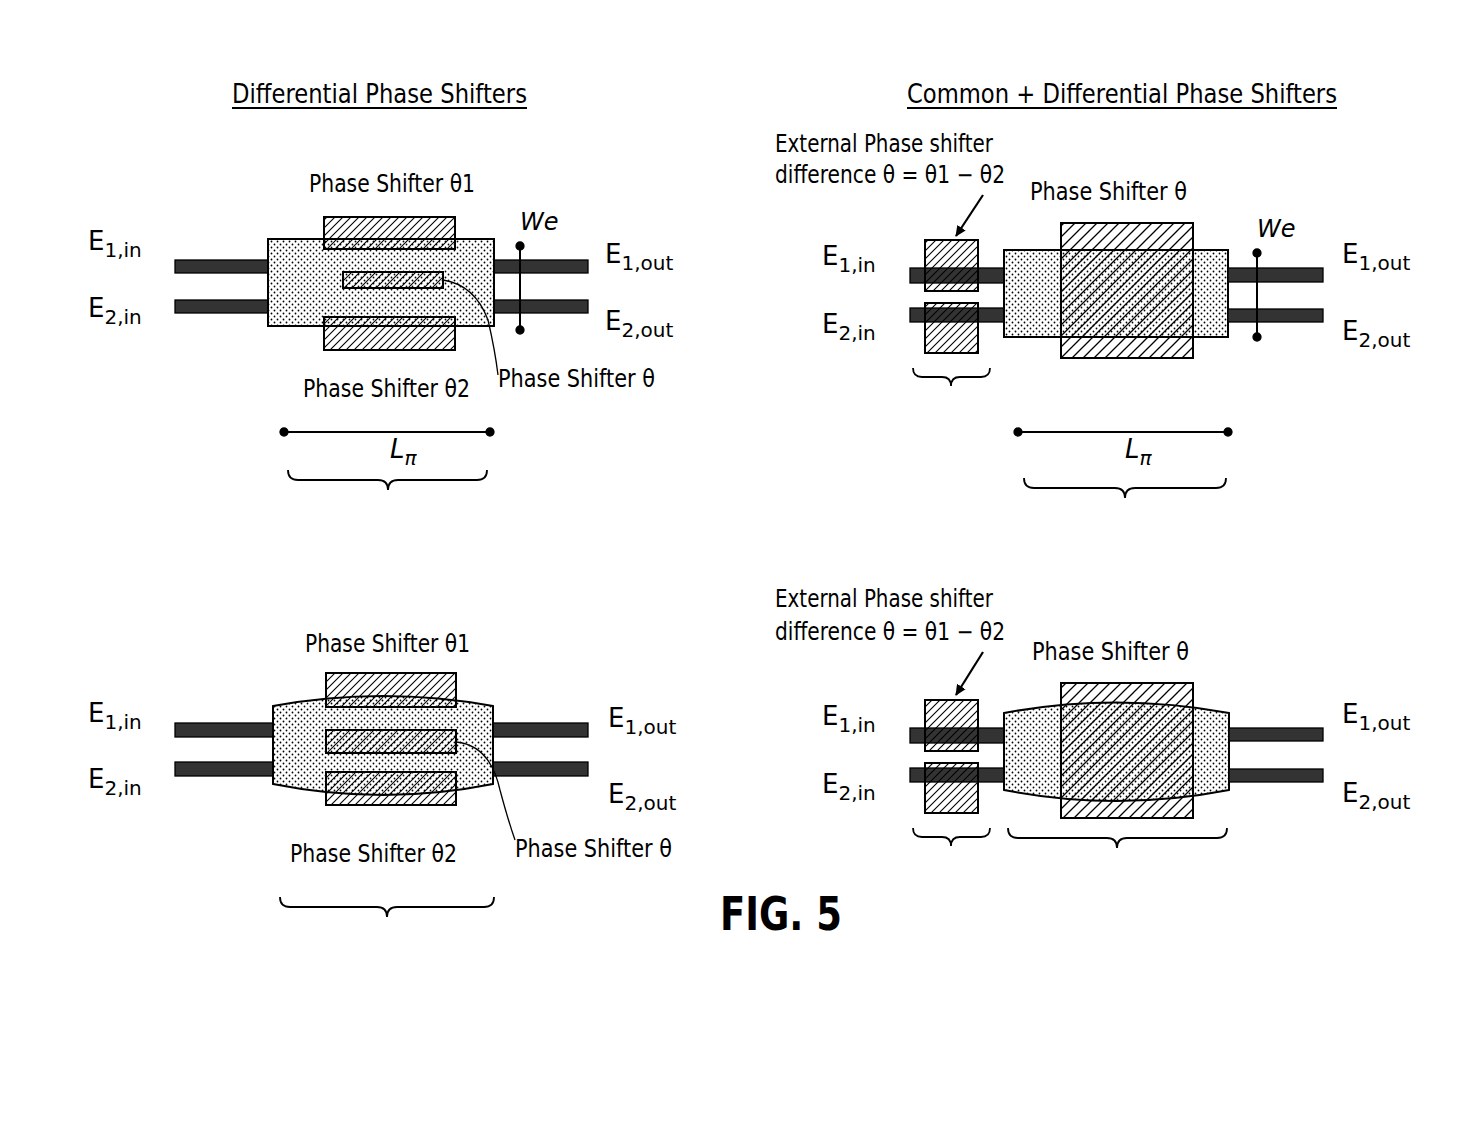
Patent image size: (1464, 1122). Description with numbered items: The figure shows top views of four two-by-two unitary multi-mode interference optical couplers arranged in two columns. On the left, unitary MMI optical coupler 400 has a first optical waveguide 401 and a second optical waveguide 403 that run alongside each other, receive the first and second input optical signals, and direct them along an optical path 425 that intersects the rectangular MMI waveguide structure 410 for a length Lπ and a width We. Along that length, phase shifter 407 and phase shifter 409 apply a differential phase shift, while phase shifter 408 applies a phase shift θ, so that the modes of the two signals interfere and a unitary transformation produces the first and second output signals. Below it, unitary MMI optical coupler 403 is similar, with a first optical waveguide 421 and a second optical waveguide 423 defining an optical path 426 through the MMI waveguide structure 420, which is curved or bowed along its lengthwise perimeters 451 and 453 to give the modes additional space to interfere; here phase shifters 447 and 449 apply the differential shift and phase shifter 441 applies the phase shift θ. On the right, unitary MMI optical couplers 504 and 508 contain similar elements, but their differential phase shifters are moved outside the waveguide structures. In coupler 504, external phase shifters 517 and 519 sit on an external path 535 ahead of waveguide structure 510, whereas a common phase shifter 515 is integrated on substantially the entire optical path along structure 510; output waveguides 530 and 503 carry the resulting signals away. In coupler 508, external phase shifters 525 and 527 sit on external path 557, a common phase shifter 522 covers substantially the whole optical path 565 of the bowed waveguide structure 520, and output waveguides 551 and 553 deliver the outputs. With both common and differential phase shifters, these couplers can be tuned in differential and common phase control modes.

The unitary MMI optical coupler 400 is at (628, 117).
The first optical waveguide 401 is at (200, 259).
The second optical waveguide 403 is at (208, 314).
The phase shifter 407 is at (328, 217).
The phase shifter 408 is at (343, 282).
The phase shifter 409 is at (337, 350).
The MMI waveguide structure 410 is at (481, 240).
The optical path 425 is at (757, 501).
The MMI waveguide structure 420 is at (410, 716).
The first optical waveguide 421 is at (202, 722).
The second optical waveguide 423 is at (207, 777).
The optical path 426 is at (387, 922).
The phase shifter 441 is at (327, 740).
The phase shifter 447 is at (457, 683).
The phase shifter 449 is at (327, 807).
The lengthwise perimeter 451 is at (288, 705).
The lengthwise perimeter 453 is at (476, 790).
The second output waveguide 503 is at (1297, 323).
The unitary MMI optical coupler 504 is at (1360, 140).
The unitary MMI optical coupler 508 is at (1347, 590).
The waveguide structure 510 is at (1213, 249).
The common phase shifter 515 is at (1193, 240).
The external phase shifter 517 is at (924, 248).
The external phase shifter 519 is at (924, 336).
The waveguide structure 520 is at (1217, 707).
The common phase shifter 522 is at (1195, 694).
The external phase shifter 525 is at (924, 708).
The external phase shifter 527 is at (924, 797).
The first output waveguide 530 is at (1305, 268).
The external path 535 is at (951, 392).
The first output waveguide 551 is at (1295, 727).
The second output waveguide 553 is at (1282, 783).
The external path 557 is at (951, 852).
The optical path 565 is at (1117, 855).